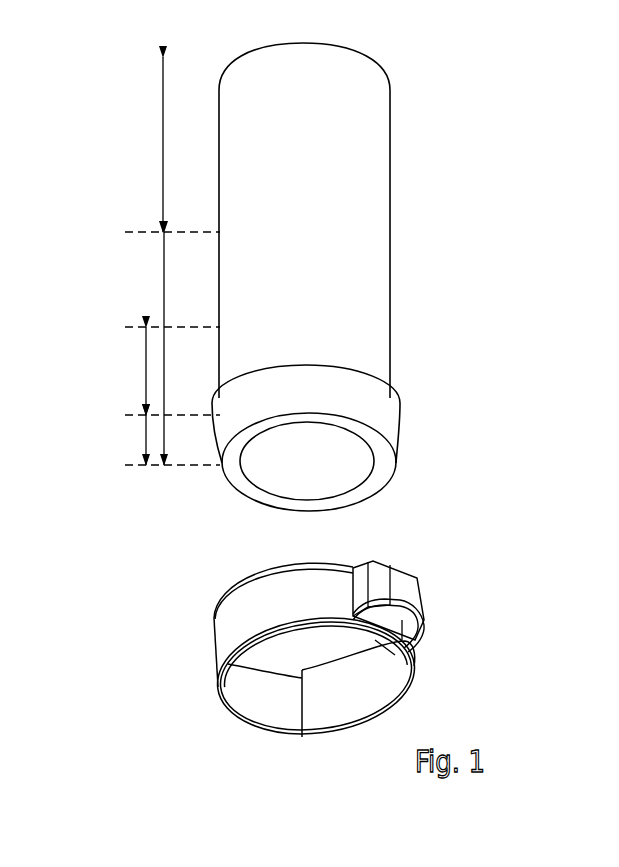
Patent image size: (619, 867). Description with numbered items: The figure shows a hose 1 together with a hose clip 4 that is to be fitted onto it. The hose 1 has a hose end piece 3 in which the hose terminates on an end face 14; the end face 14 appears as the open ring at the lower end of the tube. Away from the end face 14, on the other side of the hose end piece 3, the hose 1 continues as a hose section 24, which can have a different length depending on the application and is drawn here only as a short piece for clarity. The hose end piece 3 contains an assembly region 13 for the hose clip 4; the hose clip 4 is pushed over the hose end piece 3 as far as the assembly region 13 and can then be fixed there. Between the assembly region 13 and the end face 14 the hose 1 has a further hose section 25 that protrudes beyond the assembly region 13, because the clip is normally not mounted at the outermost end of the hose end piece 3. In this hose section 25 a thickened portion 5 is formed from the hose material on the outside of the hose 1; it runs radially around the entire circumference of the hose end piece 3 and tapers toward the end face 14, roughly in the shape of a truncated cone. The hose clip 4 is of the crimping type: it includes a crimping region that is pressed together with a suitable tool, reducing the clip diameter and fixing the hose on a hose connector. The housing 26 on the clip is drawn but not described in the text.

The hose 1 is at (437, 202).
The hose end piece 3 is at (165, 280).
The hose section 24 is at (163, 146).
The assembly region 13 is at (146, 377).
The hose section 25 is at (146, 441).
The thickened portion 5 is at (390, 416).
The end face 14 is at (383, 460).
The hose clip 4 is at (320, 653).
The clamp housing 26 is at (409, 589).